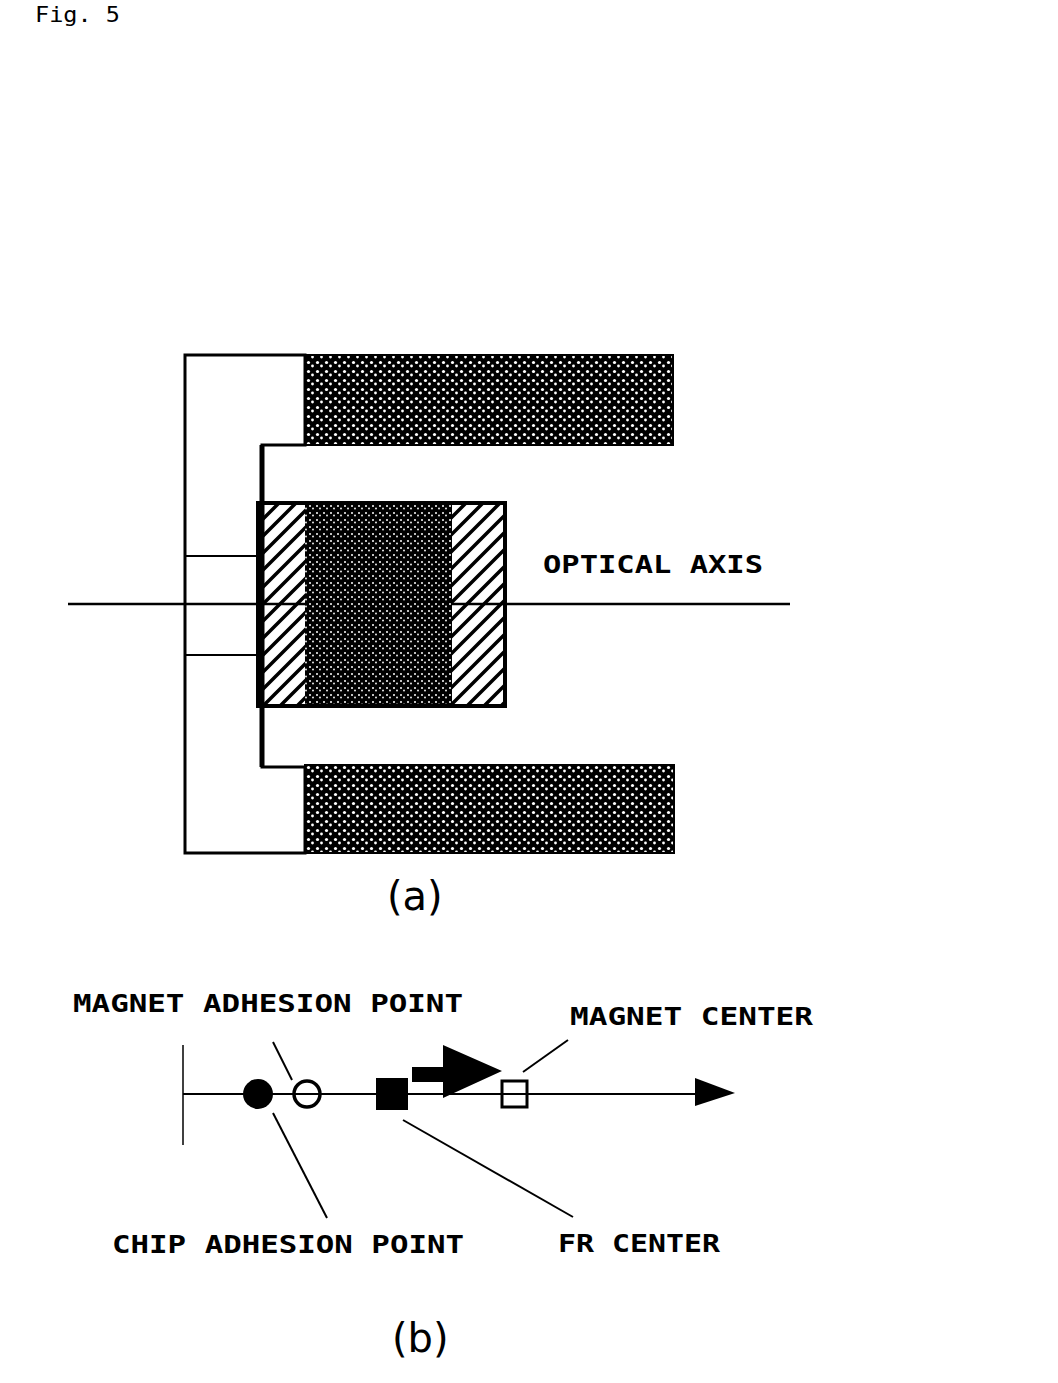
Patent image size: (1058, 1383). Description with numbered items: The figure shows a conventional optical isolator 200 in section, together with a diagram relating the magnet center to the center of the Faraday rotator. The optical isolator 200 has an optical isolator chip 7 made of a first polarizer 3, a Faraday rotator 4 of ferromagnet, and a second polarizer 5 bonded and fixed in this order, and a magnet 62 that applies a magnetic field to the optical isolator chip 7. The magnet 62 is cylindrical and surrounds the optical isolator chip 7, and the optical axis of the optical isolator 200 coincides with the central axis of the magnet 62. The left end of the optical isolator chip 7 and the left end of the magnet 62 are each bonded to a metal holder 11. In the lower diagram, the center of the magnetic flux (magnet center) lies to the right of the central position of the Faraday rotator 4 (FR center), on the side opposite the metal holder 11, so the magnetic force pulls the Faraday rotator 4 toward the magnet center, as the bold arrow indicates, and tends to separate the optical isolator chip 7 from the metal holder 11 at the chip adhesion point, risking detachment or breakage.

The first polarizer 3 is at (270, 503).
The Faraday rotator 4 is at (388, 503).
The second polarizer 5 is at (488, 503).
The optical isolator chip 7 is at (530, 677).
The metal holder 11 is at (205, 355).
The magnet 62 is at (678, 812).
The optical isolator 200 is at (308, 203).